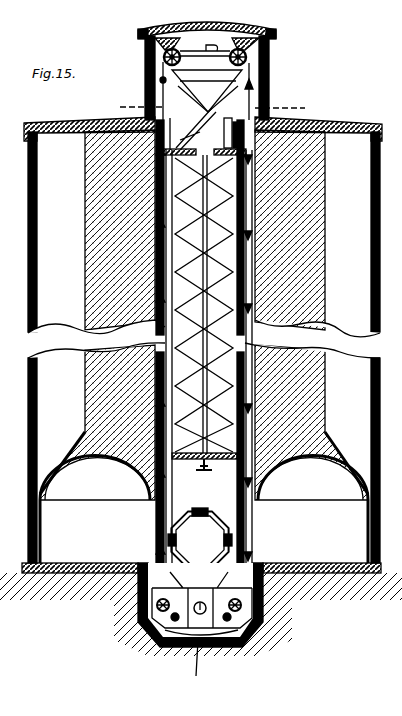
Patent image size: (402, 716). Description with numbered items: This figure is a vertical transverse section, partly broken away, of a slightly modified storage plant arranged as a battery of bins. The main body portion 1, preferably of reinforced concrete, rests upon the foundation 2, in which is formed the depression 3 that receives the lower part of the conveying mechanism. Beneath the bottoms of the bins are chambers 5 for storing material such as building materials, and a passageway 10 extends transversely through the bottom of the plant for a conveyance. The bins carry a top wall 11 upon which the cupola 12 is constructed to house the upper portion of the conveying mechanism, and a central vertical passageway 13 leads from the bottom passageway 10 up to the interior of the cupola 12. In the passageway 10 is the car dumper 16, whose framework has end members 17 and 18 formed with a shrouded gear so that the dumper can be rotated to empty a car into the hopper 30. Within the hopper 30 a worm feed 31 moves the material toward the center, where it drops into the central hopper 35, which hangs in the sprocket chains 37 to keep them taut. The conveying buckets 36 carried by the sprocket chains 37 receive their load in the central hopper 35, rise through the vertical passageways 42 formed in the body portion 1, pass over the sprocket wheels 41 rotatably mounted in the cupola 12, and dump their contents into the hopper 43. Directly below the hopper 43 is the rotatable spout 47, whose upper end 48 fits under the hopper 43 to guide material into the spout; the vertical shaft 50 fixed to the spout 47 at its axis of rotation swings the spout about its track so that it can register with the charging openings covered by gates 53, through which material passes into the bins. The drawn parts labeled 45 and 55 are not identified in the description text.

The main body portion 1 is at (28, 252).
The foundation 2 is at (50, 575).
The depression 3 is at (137, 636).
The chambers 5 is at (181, 509).
The passageway 10 is at (205, 511).
The top wall 11 is at (345, 126).
The cupola 12 is at (268, 80).
The vertical passageway 13 is at (200, 341).
The car dumper 16 is at (238, 519).
The end member 17 is at (215, 346).
The end member 18 is at (212, 108).
The hopper 30 is at (202, 600).
The right hand worm feed 31 is at (222, 630).
The central hopper 35 is at (242, 622).
The conveying buckets 36 is at (160, 79).
The sprocket chains 37 is at (166, 172).
The sprocket wheels 41 is at (162, 48).
The vertical passageways 42 is at (245, 269).
The hopper 43 is at (207, 89).
The top cap 45 is at (270, 40).
The rotatable spout 47 is at (192, 118).
The upper end of spout 48 is at (208, 97).
The vertical shaft 50 is at (206, 251).
The gates 53 is at (228, 118).
The stop 55 is at (200, 471).